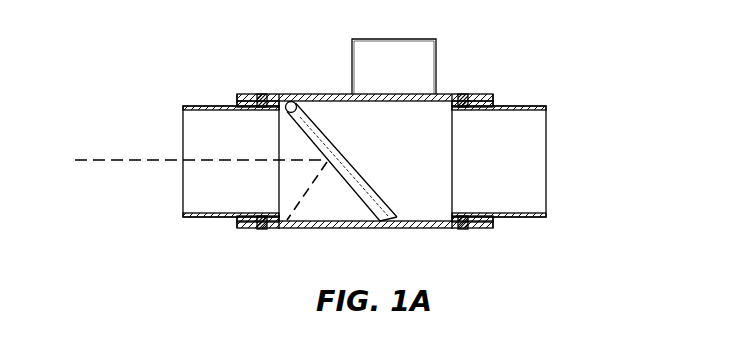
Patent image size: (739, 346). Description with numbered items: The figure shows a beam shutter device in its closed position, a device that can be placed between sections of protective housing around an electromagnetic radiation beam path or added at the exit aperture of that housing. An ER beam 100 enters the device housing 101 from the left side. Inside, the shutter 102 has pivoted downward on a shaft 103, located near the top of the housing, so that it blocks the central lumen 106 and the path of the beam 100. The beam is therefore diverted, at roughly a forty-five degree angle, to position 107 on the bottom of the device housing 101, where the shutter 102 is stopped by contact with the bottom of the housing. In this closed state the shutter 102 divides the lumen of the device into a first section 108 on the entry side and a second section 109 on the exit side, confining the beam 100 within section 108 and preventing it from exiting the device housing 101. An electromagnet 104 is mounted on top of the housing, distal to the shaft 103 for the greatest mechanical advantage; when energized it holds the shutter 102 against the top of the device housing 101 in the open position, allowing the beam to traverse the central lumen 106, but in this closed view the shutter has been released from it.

The ER beam 100 is at (133, 155).
The device housing 101 is at (196, 107).
The shutter 102 is at (358, 207).
The shaft 103 is at (291, 101).
The electromagnet 104 is at (437, 43).
The central lumen 106 is at (524, 169).
The position 107 is at (290, 229).
The first section 108 is at (287, 140).
The second section 109 is at (420, 128).